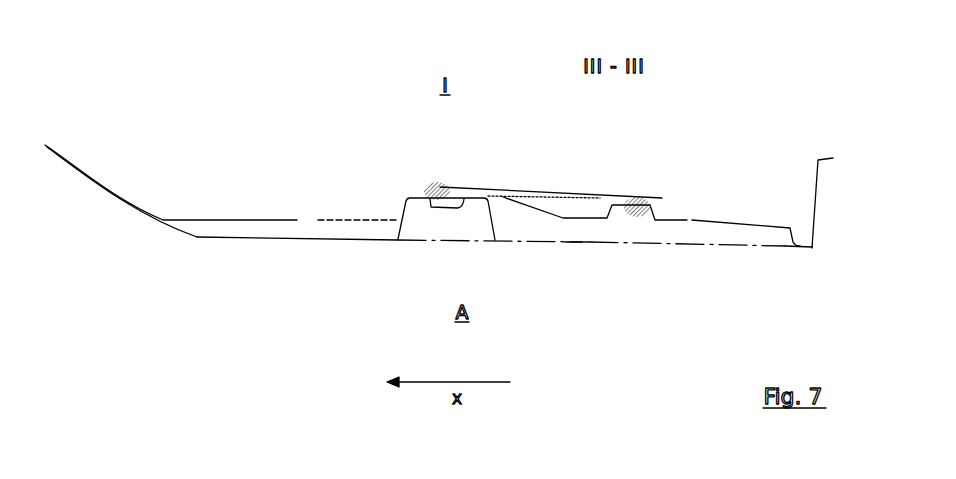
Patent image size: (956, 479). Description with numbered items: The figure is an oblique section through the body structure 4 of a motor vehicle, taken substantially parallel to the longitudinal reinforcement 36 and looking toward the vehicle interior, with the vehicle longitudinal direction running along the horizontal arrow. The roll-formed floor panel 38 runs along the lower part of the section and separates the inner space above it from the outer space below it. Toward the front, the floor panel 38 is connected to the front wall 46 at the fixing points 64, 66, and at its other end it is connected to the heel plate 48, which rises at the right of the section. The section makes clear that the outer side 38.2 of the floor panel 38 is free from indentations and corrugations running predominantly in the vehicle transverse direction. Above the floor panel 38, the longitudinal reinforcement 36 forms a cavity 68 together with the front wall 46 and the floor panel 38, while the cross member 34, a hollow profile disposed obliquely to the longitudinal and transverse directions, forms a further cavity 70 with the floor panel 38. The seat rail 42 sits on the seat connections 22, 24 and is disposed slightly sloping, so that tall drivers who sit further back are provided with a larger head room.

The body structure 4 is at (303, 90).
The seat connection 22 is at (423, 193).
The seat connection 24 is at (643, 202).
The cross member 34 is at (473, 211).
The longitudinal reinforcement 36 is at (160, 222).
The floor panel 38 is at (693, 246).
The outer side of the floor panel 38.2 is at (573, 241).
The seat rail 42 is at (562, 193).
The front wall 46 is at (130, 217).
The heel plate 48 is at (815, 192).
The fixing point 64 is at (365, 240).
The fixing point 66 is at (805, 246).
The cavity 68 is at (272, 232).
The cavity 70 is at (459, 234).